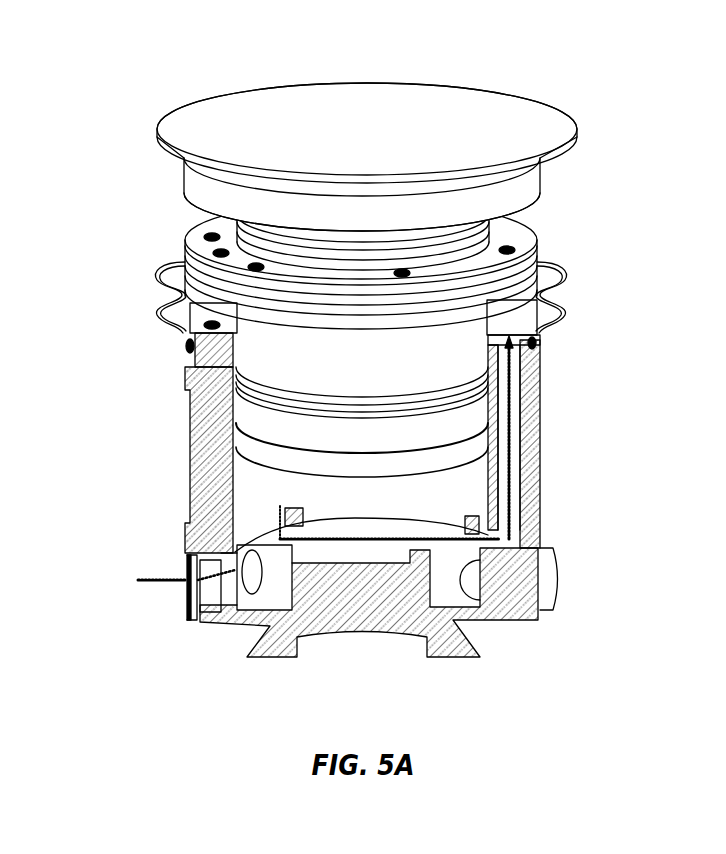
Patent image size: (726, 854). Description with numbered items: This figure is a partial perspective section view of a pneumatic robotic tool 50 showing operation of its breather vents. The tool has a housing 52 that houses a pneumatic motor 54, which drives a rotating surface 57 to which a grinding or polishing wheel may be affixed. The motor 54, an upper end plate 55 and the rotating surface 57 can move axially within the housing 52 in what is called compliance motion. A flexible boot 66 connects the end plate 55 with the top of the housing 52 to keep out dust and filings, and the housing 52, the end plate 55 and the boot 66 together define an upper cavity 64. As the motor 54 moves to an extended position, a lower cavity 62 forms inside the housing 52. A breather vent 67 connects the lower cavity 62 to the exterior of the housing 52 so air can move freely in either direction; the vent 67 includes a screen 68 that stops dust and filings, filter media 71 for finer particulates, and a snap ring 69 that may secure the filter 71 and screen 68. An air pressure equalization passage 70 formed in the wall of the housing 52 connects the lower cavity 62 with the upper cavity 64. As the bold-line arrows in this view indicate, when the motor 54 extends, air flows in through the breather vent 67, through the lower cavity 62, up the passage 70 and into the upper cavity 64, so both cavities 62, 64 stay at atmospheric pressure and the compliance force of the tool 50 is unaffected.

The pneumatic robotic tool 50 is at (541, 68).
The housing 52 is at (210, 455).
The pneumatic motor 54 is at (292, 378).
The end plate 55 is at (515, 237).
The rotating surface 57 is at (531, 131).
The lower cavity 62 is at (462, 495).
The upper cavity 64 is at (549, 323).
The flexible boot 66 is at (555, 263).
The breather vent 67 is at (168, 597).
The screen 68 is at (203, 598).
The snap ring 69 is at (194, 603).
The air pressure equalization passage 70 is at (515, 443).
The filter media 71 is at (187, 572).